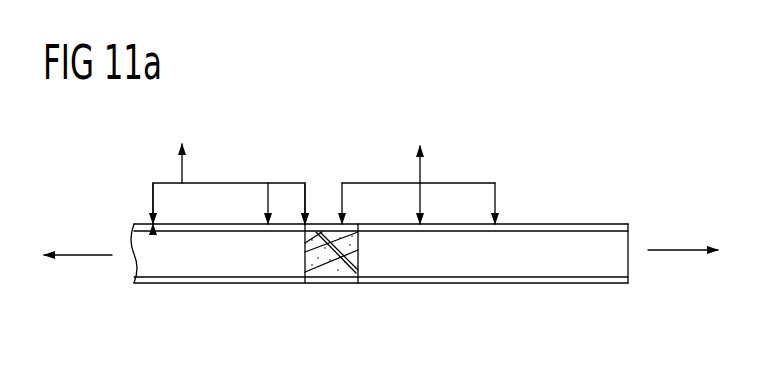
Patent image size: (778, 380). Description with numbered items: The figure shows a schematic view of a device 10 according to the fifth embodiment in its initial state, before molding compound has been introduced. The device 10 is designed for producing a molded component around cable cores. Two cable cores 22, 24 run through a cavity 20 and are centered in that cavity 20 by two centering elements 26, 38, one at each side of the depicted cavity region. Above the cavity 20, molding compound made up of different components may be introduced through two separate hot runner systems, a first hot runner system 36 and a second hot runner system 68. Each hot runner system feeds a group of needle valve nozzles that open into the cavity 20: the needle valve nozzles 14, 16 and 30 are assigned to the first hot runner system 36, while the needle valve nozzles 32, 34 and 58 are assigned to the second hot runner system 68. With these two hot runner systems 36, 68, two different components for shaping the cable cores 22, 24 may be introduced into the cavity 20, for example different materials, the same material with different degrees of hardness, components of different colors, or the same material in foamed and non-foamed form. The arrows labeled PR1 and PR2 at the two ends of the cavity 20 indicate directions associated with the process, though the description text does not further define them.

The device 10 is at (641, 118).
The needle valve nozzle 14 is at (150, 188).
The needle valve nozzle 16 is at (258, 182).
The cavity 20 is at (603, 222).
The cable core 22 is at (331, 274).
The cable core 24 is at (293, 285).
The centering element 26 is at (577, 285).
The needle valve nozzle 30 is at (293, 182).
The needle valve nozzle 32 is at (341, 186).
The needle valve nozzle 34 is at (411, 182).
The first hot runner system 36 is at (232, 182).
The centering element 38 is at (177, 278).
The needle valve nozzle 58 is at (497, 186).
The second hot runner system 68 is at (488, 182).
The first process direction PR1 is at (683, 248).
The second process direction PR2 is at (80, 252).